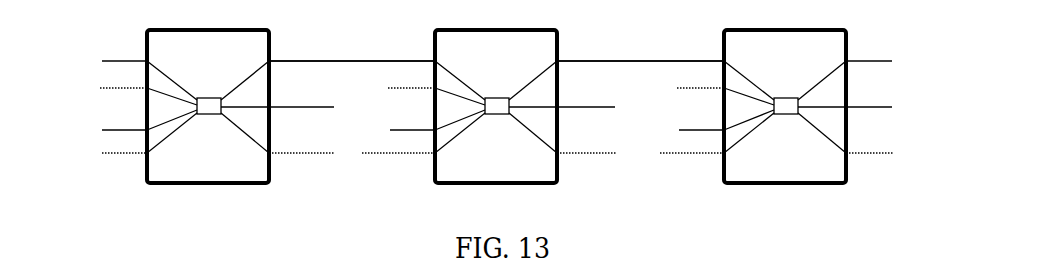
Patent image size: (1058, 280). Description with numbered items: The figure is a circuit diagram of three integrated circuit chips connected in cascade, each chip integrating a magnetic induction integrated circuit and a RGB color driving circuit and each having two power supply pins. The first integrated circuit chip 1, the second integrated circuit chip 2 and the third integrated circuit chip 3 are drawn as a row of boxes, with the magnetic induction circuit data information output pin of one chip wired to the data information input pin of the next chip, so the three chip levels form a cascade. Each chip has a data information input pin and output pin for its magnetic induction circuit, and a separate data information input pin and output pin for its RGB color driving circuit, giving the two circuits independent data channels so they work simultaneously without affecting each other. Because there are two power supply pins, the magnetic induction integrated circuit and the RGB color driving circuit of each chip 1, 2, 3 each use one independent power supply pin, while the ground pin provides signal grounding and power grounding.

The first integrated circuit chip 1 is at (241, 106).
The second integrated circuit chip 2 is at (496, 106).
The third integrated circuit chip 3 is at (755, 106).